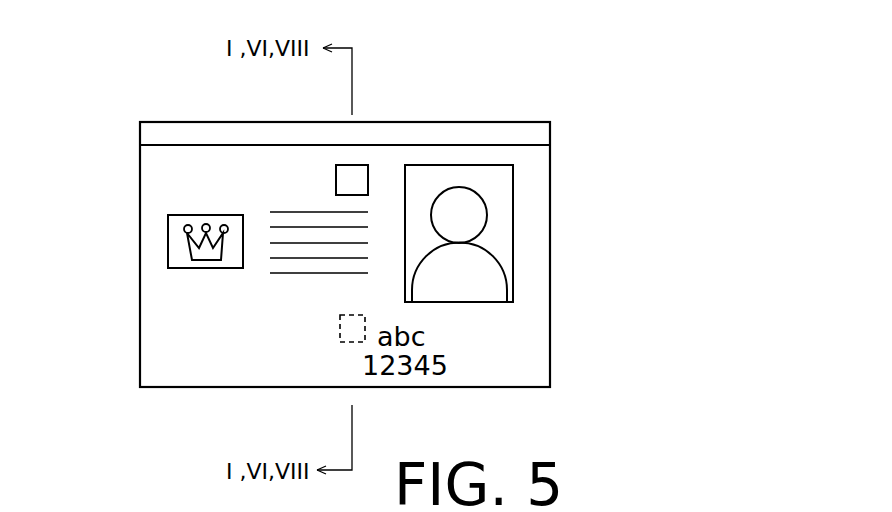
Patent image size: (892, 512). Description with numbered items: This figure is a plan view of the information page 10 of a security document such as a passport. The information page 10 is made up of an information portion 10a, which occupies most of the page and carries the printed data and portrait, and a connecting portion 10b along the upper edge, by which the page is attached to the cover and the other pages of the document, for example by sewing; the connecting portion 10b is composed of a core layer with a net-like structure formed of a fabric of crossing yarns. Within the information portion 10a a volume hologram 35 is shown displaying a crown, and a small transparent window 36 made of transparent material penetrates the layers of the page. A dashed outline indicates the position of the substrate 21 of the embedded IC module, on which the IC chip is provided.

The information page 10 is at (597, 86).
The information portion 10a is at (533, 253).
The connecting portion 10b is at (533, 137).
The substrate 21 is at (340, 340).
The volume hologram 35 is at (168, 247).
The transparent window 36 is at (336, 166).